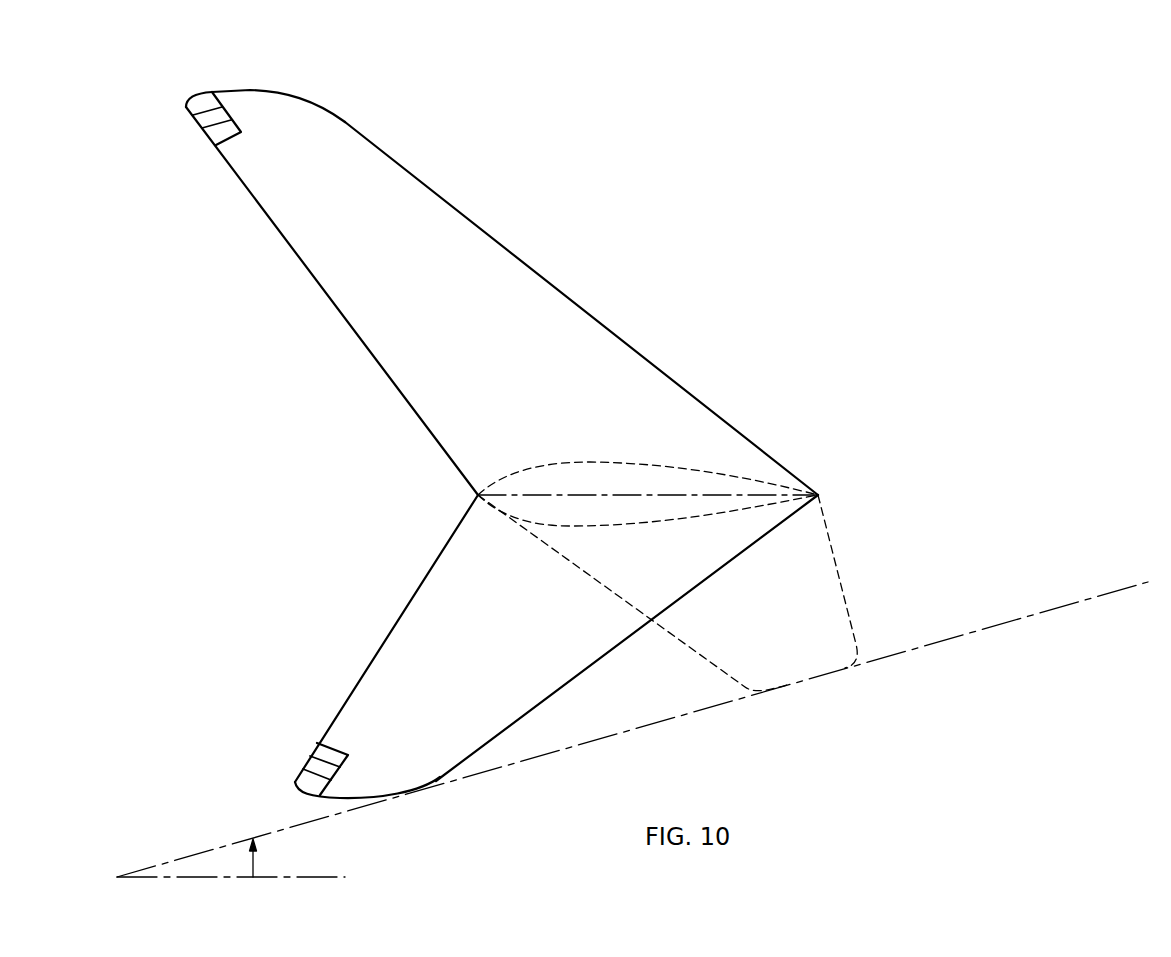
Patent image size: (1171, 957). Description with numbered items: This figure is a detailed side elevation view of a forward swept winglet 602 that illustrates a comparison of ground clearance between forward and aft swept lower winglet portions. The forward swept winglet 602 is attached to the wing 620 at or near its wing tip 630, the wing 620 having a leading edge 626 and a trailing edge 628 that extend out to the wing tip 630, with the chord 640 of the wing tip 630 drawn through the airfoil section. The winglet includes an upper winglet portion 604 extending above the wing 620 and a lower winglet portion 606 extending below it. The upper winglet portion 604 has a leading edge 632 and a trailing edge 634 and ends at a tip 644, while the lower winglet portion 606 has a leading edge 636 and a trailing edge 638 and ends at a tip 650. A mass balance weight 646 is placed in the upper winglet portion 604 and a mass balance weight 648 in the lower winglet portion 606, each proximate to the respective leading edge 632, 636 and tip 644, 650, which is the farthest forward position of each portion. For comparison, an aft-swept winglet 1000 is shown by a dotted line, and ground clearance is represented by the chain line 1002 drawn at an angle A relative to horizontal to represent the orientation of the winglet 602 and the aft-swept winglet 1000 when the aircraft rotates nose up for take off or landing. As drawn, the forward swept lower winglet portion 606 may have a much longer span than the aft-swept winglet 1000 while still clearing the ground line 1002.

The forward swept winglet 602 is at (598, 270).
The upper winglet portion 604 is at (445, 281).
The lower winglet portion 606 is at (514, 673).
The wing 620 is at (615, 464).
The leading edge 626 is at (478, 495).
The trailing edge 628 is at (820, 496).
The wing tip 630 is at (668, 504).
The leading edge 632 is at (315, 283).
The trailing edge 634 is at (638, 350).
The leading edge 636 is at (405, 606).
The trailing edge 638 is at (565, 684).
The chord 640 is at (613, 497).
The tip 644 is at (262, 89).
The mass balance weight 646 is at (200, 126).
The mass balance weight 648 is at (307, 758).
The tip 650 is at (358, 800).
The aft-swept winglet 1000 is at (842, 574).
The chain line 1002 is at (977, 631).
The angle A is at (257, 857).